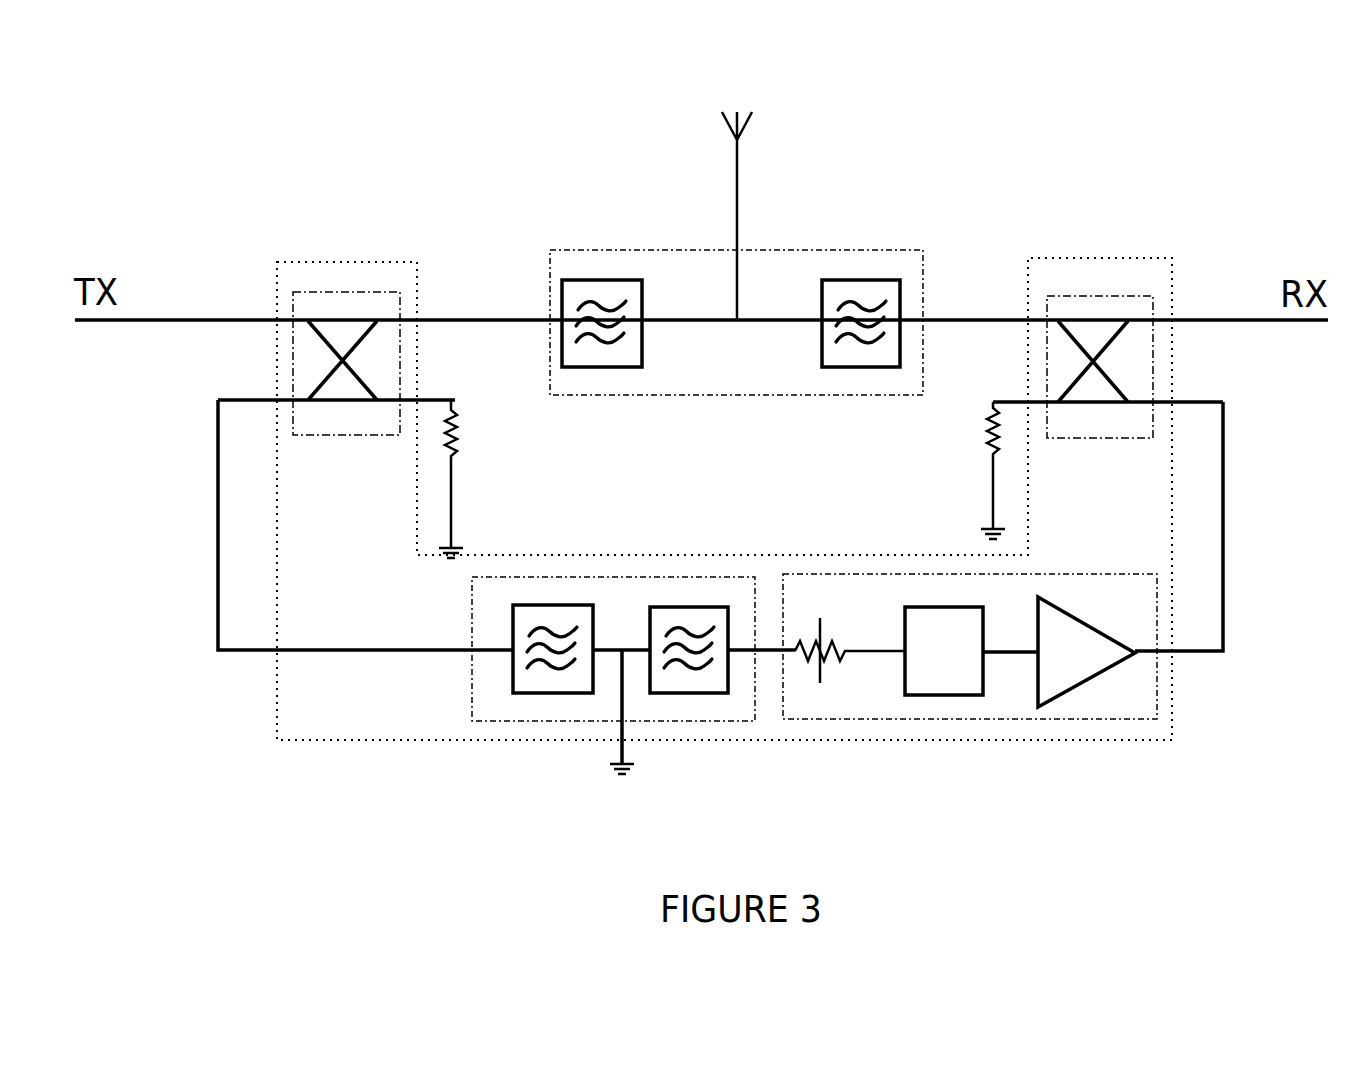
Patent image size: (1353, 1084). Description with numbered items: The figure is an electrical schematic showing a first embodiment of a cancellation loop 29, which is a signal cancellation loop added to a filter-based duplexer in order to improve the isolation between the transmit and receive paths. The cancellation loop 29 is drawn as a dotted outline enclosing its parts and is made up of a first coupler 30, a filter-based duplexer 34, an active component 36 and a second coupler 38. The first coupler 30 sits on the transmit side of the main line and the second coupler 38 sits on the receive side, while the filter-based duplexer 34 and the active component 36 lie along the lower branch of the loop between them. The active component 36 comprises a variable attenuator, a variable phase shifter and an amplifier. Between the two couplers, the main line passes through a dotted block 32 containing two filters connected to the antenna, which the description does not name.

The cancellation loop 29 is at (775, 740).
The first coupler 30 is at (345, 288).
The duplexer with antenna 32 is at (857, 253).
The filter-based duplexer 34 is at (613, 577).
The active component 36 is at (970, 720).
The second coupler 38 is at (1098, 293).